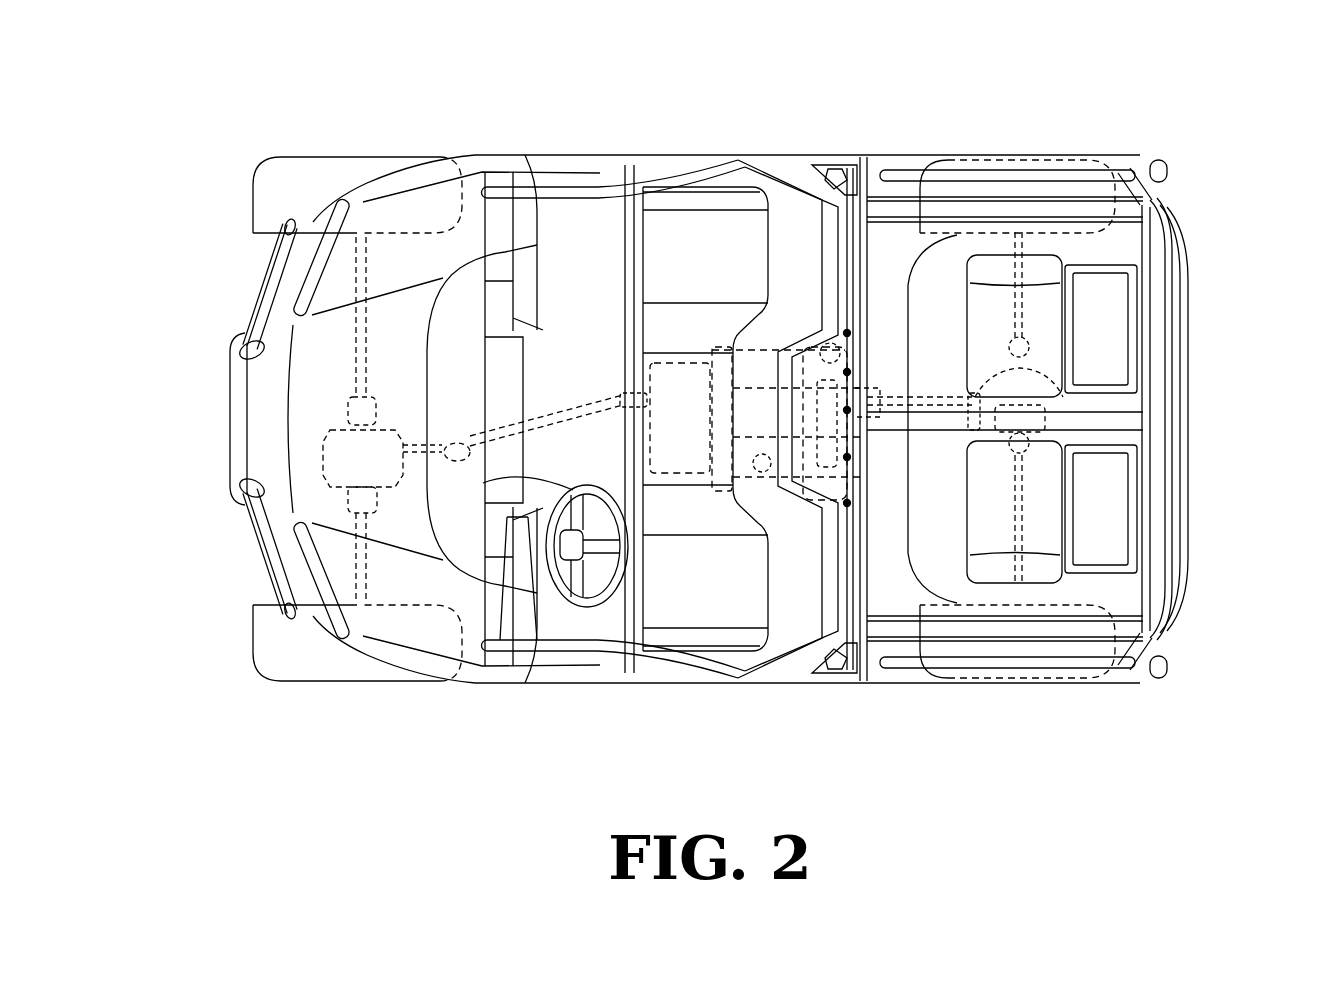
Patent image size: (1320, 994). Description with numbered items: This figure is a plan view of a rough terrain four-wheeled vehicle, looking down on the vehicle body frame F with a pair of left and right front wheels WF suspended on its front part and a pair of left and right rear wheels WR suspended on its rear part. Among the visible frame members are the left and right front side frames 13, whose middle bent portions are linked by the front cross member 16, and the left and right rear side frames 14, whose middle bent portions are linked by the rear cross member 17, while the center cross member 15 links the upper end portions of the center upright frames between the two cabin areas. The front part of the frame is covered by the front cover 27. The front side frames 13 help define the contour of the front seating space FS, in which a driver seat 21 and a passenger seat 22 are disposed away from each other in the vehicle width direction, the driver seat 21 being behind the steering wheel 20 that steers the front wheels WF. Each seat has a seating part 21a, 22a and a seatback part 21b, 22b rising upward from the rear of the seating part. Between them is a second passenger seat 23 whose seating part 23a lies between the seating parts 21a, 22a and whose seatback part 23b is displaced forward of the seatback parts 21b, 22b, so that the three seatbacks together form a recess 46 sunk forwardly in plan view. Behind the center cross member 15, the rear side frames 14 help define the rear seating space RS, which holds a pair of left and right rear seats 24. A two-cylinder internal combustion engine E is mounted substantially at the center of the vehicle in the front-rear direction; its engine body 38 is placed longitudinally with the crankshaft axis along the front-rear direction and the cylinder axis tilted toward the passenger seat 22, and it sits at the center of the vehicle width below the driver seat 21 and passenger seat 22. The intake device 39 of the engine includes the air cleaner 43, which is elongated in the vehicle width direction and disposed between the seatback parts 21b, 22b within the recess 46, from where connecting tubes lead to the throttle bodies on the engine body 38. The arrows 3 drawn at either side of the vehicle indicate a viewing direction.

The front cover 27 is at (387, 212).
The front side frames 13 is at (560, 182).
The front cross member 16 is at (649, 185).
The passenger seat 22 is at (724, 178).
The seating part 22a is at (665, 237).
The seatback part 22b is at (818, 255).
The driver seat 21 is at (714, 660).
The seating part 21a is at (725, 614).
The seatback part 21b is at (835, 600).
The center cross member 15 is at (884, 220).
The intake device 39 is at (858, 312).
The second passenger seat 23 is at (655, 350).
The seating part 23a is at (700, 367).
The seatback part 23b is at (797, 373).
The engine body 38 is at (645, 386).
The recess 46 is at (805, 442).
The air cleaner 43 is at (832, 430).
The steering wheel 20 is at (490, 481).
The rear seats 24 is at (1038, 248).
The rear side frames 14 is at (1098, 177).
The rear cross member 17 is at (1152, 258).
The front wheels WF is at (285, 172).
The rear wheels WR is at (915, 190).
The front seating space FS is at (605, 282).
The rear seating space RS is at (955, 464).
The internal combustion engine E is at (706, 492).
The vehicle body frame F is at (627, 688).
The section line 3 is at (217, 445).